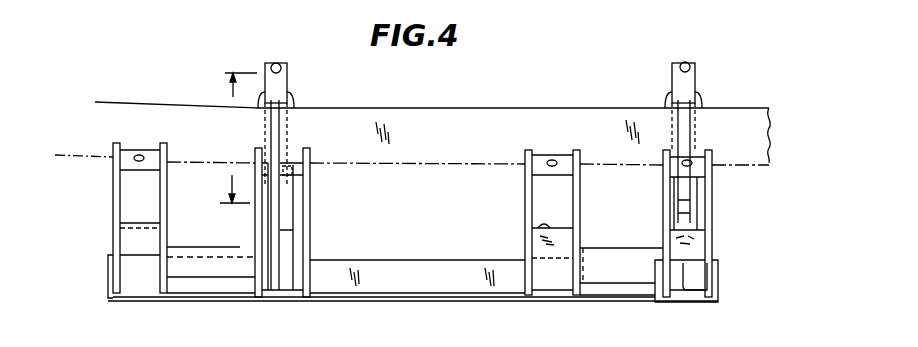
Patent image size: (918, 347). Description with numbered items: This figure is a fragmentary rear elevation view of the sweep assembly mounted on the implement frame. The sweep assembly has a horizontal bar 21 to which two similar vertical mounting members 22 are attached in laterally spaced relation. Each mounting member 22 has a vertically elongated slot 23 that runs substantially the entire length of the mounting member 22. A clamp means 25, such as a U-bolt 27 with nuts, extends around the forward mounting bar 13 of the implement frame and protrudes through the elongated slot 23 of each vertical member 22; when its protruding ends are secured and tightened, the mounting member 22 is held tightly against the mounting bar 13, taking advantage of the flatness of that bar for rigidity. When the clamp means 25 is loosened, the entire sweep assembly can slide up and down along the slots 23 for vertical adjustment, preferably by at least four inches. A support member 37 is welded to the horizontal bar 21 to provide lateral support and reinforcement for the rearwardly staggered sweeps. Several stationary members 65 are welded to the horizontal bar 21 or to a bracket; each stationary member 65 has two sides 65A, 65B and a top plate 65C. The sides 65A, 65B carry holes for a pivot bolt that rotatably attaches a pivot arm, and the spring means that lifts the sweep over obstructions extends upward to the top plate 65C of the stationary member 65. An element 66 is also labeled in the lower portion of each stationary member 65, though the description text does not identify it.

The forward mounting bar 13 is at (418, 108).
The horizontal bar 21 is at (387, 262).
The mounting member 22 is at (290, 63).
The elongated slot 23 is at (290, 78).
The clamp means 25 is at (262, 131).
The U-bolt 27 is at (295, 115).
The support member 37 is at (220, 248).
The stationary member 65 is at (113, 205).
The stationary member side 65A is at (662, 192).
The stationary member side 65B is at (713, 185).
The top plate 65C is at (700, 155).
The lower block 66 is at (113, 247).